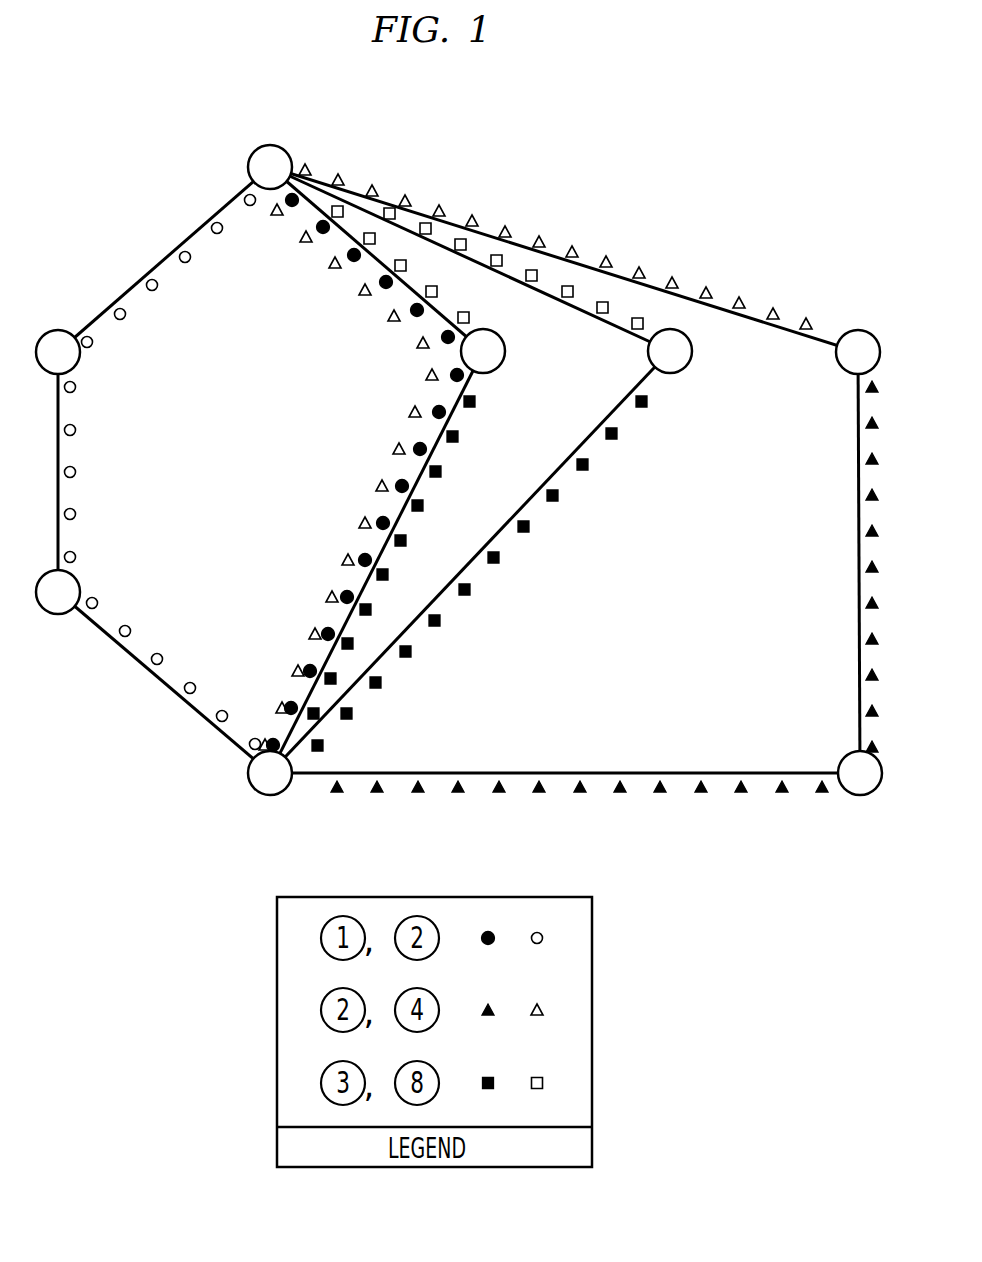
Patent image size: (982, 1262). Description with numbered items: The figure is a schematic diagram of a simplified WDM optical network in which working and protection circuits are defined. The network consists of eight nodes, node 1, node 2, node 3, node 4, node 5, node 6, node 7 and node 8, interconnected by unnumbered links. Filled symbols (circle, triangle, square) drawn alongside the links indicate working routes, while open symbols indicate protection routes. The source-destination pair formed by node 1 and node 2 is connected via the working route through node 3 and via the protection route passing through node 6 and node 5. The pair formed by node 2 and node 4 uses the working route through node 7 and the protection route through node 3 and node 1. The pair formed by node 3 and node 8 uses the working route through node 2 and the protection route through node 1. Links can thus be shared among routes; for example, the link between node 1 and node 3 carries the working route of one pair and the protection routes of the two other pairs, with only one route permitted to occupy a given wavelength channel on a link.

The node 1 is at (270, 167).
The node 2 is at (270, 773).
The node 3 is at (483, 351).
The node 4 is at (858, 352).
The node 5 is at (58, 592).
The node 6 is at (58, 352).
The node 7 is at (860, 773).
The node 8 is at (670, 351).